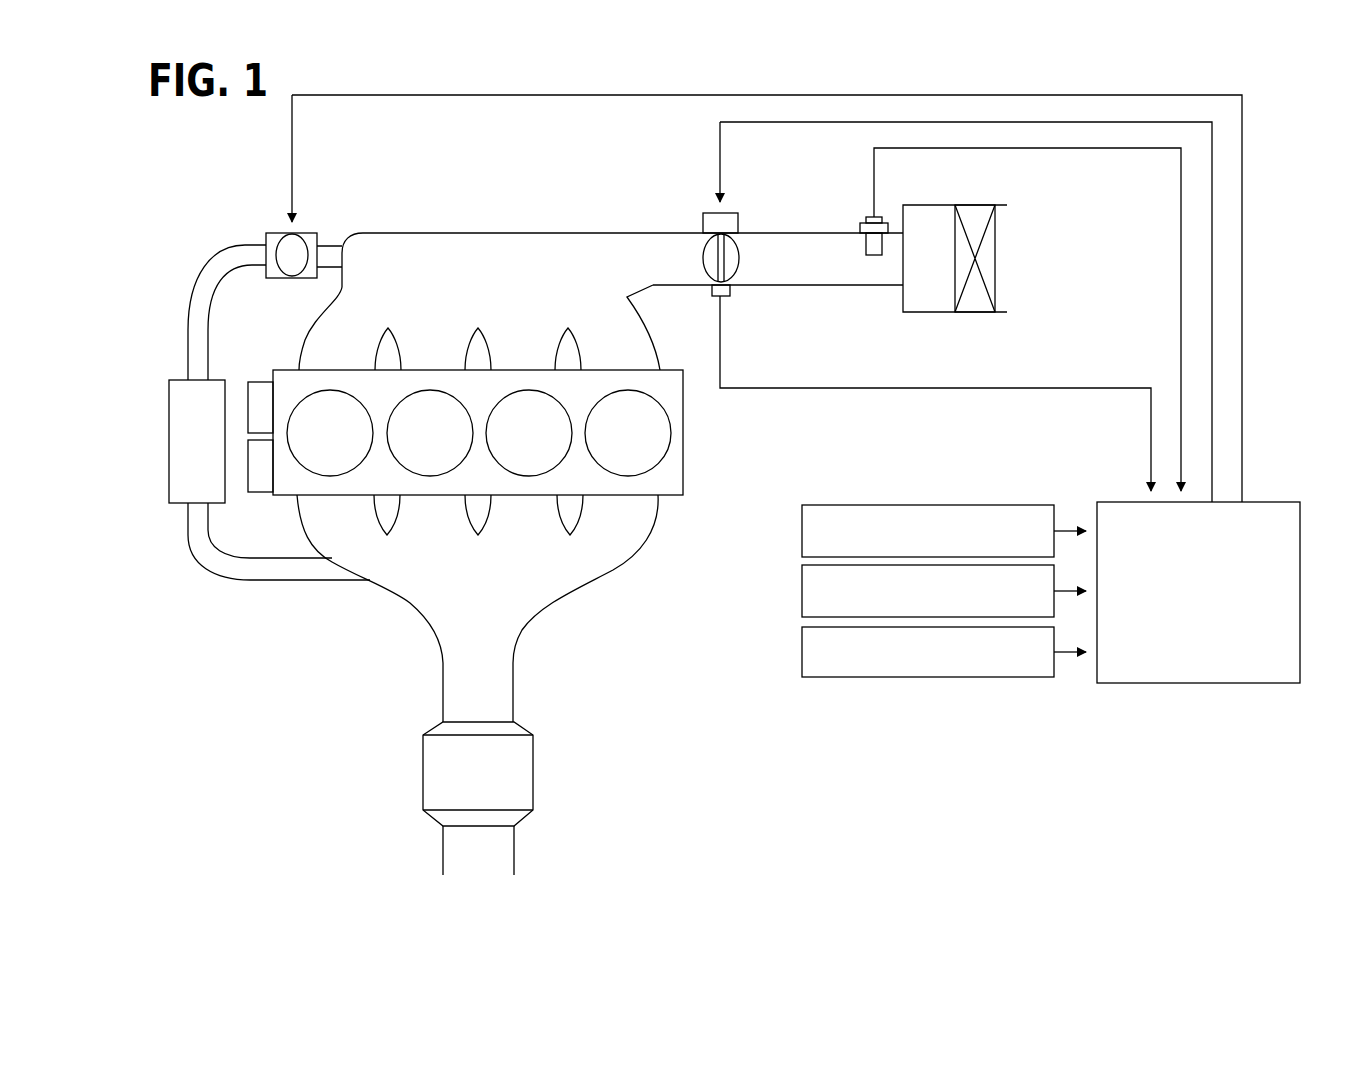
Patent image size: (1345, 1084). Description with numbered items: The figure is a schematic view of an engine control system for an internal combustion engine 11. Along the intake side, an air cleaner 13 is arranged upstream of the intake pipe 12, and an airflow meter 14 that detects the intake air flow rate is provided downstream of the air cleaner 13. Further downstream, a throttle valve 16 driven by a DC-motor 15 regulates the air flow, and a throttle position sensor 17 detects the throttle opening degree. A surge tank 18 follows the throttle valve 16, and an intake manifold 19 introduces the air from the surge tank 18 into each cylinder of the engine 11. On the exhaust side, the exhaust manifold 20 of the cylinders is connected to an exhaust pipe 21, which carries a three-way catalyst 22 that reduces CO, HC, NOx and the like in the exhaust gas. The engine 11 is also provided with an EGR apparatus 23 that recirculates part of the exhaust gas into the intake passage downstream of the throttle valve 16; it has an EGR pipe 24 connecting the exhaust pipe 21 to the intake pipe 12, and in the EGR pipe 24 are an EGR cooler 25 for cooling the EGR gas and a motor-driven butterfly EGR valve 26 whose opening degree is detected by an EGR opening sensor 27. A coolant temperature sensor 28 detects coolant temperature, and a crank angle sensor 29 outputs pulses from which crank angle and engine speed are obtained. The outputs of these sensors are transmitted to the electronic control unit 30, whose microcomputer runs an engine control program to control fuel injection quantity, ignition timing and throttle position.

The internal combustion engine 11 is at (456, 225).
The intake pipe 12 is at (790, 233).
The air cleaner 13 is at (1005, 258).
The airflow meter 14 is at (866, 244).
The DC-motor 15 is at (708, 213).
The throttle valve 16 is at (703, 262).
The throttle position sensor 17 is at (730, 288).
The surge tank 18 is at (495, 233).
The intake manifold 19 is at (305, 326).
The exhaust manifold 20 is at (305, 532).
The exhaust pipe 21 is at (442, 660).
The three-way catalyst 22 is at (423, 772).
The EGR apparatus 23 is at (252, 228).
The EGR pipe 24 is at (190, 313).
The EGR cooler 25 is at (169, 445).
The EGR valve 26 is at (303, 233).
The EGR opening sensor 27 is at (802, 527).
The coolant temperature sensor 28 is at (802, 587).
The crank angle sensor 29 is at (802, 647).
The electronic control unit (ECU) 30 is at (1266, 502).